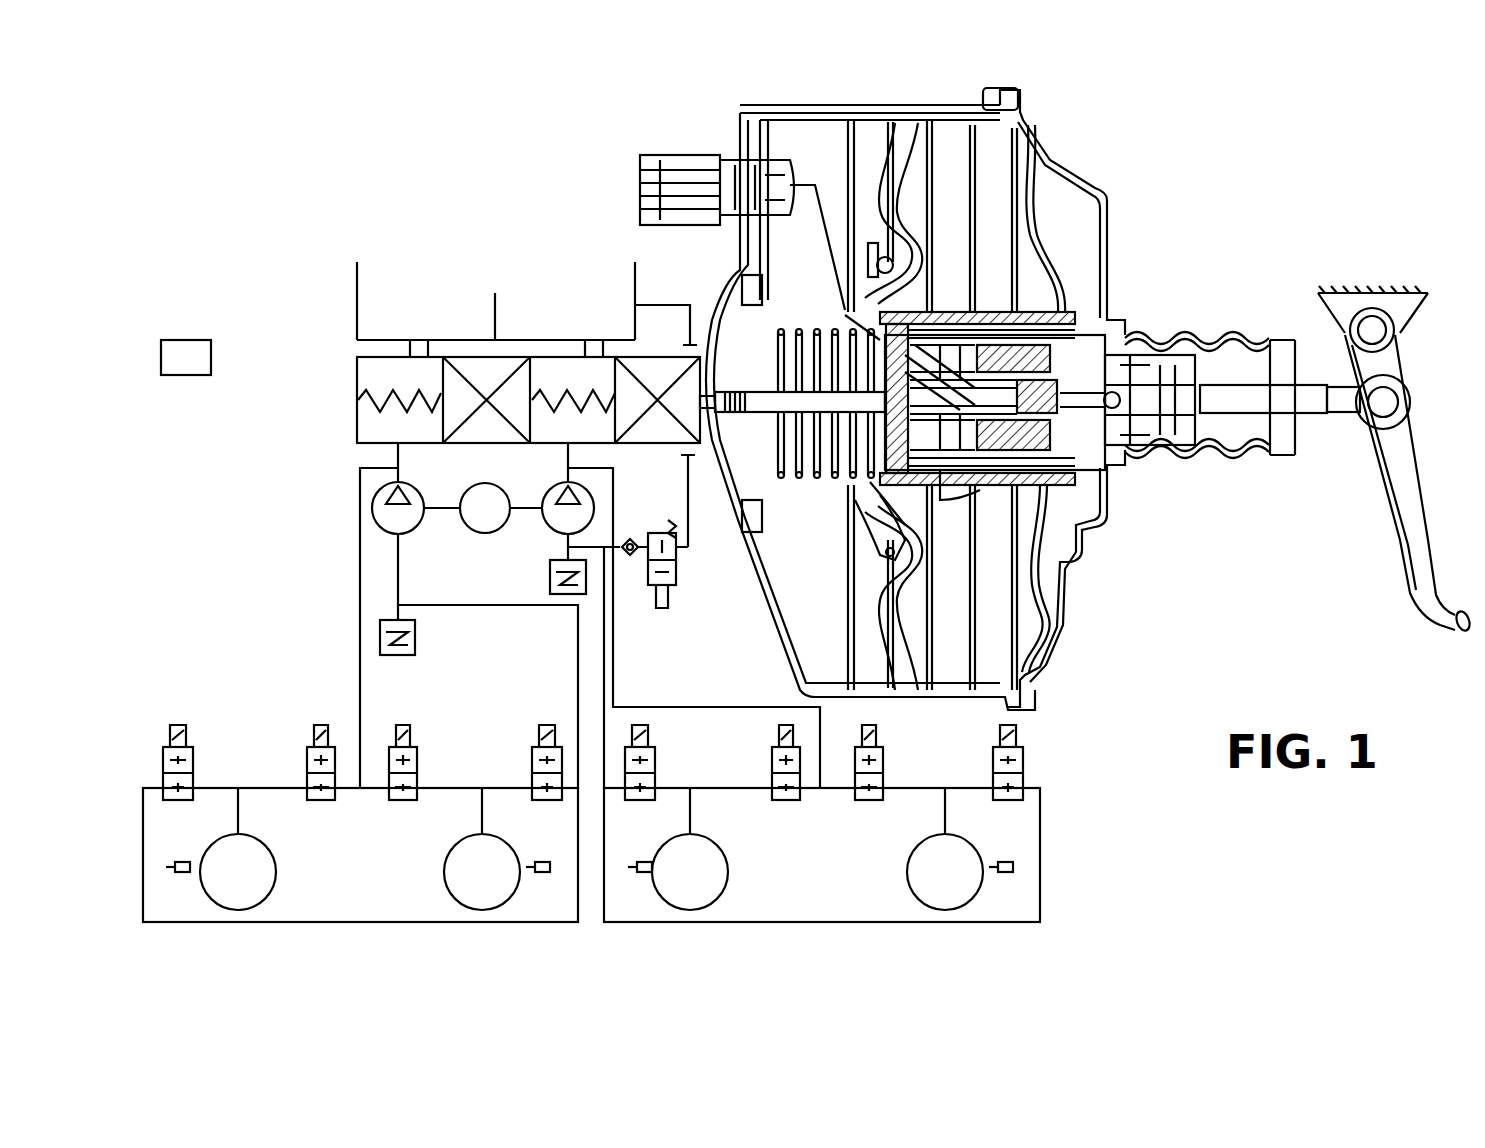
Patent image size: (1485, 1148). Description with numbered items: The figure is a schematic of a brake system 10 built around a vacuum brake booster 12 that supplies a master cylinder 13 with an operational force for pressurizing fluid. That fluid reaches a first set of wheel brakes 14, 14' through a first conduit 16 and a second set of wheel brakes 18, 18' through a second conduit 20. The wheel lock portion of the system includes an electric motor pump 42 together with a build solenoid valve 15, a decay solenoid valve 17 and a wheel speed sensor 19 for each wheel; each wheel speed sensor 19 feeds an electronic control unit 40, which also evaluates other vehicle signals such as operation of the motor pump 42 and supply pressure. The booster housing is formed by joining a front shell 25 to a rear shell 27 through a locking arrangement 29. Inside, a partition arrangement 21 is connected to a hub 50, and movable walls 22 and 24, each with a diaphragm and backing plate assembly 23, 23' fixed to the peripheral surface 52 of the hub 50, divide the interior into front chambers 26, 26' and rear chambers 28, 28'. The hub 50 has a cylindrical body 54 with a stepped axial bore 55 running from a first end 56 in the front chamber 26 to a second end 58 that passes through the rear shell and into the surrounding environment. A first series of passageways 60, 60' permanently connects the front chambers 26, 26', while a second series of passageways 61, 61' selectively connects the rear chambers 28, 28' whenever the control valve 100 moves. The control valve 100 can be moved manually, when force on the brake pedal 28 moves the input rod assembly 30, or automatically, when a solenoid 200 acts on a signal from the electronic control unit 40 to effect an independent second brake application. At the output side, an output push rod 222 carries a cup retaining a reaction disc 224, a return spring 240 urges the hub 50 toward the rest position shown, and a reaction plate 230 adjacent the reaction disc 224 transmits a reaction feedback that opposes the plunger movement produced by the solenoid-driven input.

The brake system 10 is at (218, 516).
The vacuum brake booster 12 is at (1056, 395).
The master cylinder 13 is at (357, 357).
The first set of wheel brakes 14 is at (360, 855).
The first set of wheel brakes 14' is at (451, 849).
The build solenoid valve 15 is at (307, 755).
The first conduit 16 is at (358, 563).
The decay solenoid valve 17 is at (163, 755).
The second set of wheel brakes 18 is at (822, 855).
The second set of wheel brakes 18' is at (923, 849).
The wheel speed sensor 19 is at (182, 862).
The second conduit 20 is at (702, 707).
The partition arrangement 21 is at (945, 113).
The movable wall 22 is at (895, 608).
The diaphragm and backing plate assembly 23 is at (938, 172).
The diaphragm and backing plate assembly 23' is at (1065, 264).
The movable wall 24 is at (1035, 585).
The front shell 25 is at (740, 130).
The front chamber 26 is at (870, 407).
The front chamber 26' is at (951, 198).
The rear shell 27 is at (1050, 160).
The brake pedal 28 is at (1163, 406).
The rear chamber 28' is at (1054, 398).
The locking arrangement 29 is at (1025, 92).
The input rod assembly 30 is at (1350, 412).
The electronic control unit 40 is at (184, 340).
The electric motor pump 42 is at (485, 533).
The hub 50 is at (858, 505).
The peripheral surface 52 is at (943, 318).
The cylindrical body 54 is at (1138, 352).
The stepped axial bore 55 is at (1135, 338).
The first end 56 is at (848, 310).
The second end 58 is at (1248, 335).
The first series of passageways 60 is at (825, 302).
The first series of passageways 60' is at (1001, 291).
The second series of passageways 61 is at (975, 496).
The second series of passageways 61' is at (852, 566).
The control valve 100 is at (1175, 462).
The solenoid 200 is at (990, 482).
The output push rod 222 is at (776, 402).
The reaction disc 224 is at (928, 312).
The reaction plate 230 is at (870, 482).
The return spring 240 is at (778, 498).